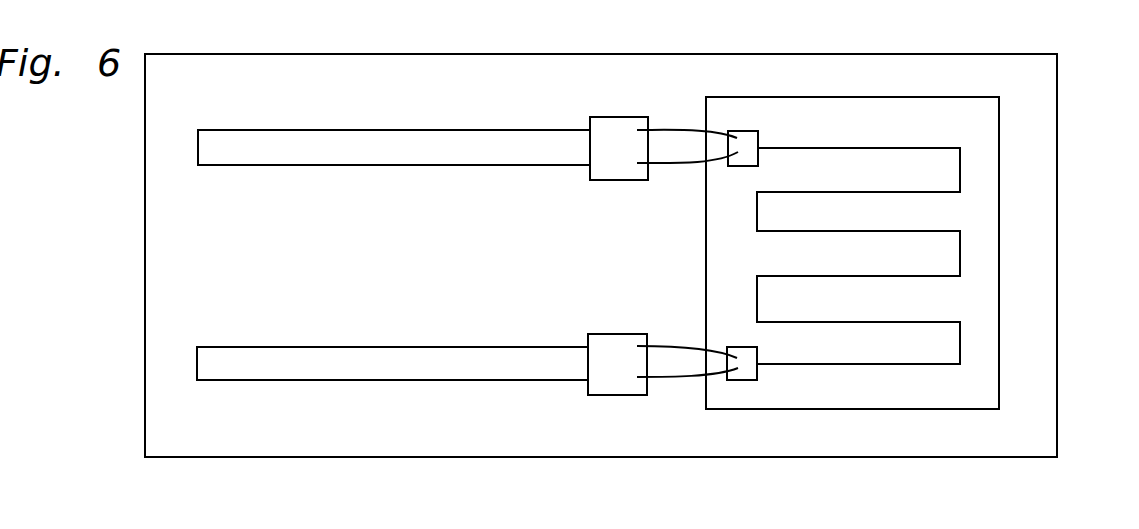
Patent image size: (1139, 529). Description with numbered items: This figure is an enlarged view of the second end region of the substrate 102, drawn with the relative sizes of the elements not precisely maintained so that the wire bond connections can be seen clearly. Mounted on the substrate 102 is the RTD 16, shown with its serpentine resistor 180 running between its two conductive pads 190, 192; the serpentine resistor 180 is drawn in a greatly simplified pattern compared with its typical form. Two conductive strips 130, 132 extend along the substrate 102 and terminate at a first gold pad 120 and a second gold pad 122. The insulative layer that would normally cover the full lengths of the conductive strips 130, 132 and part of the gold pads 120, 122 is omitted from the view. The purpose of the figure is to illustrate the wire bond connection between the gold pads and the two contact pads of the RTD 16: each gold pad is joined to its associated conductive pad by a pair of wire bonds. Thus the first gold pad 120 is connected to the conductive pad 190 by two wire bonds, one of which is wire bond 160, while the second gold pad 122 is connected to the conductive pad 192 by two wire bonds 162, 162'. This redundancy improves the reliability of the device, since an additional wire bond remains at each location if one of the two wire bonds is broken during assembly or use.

The substrate 102 is at (1043, 165).
The RTD 16 is at (987, 110).
The conductive strip 130 is at (273, 140).
The conductive strip 132 is at (285, 375).
The first gold pad 120 is at (617, 127).
The second gold pad 122 is at (605, 387).
The wire bond 160 is at (683, 128).
The wire bond 162' is at (684, 198).
The wire bond 162 is at (687, 395).
The conductive pad 190 is at (748, 140).
The conductive pad 192 is at (743, 373).
The serpentine resistor 180 is at (857, 364).